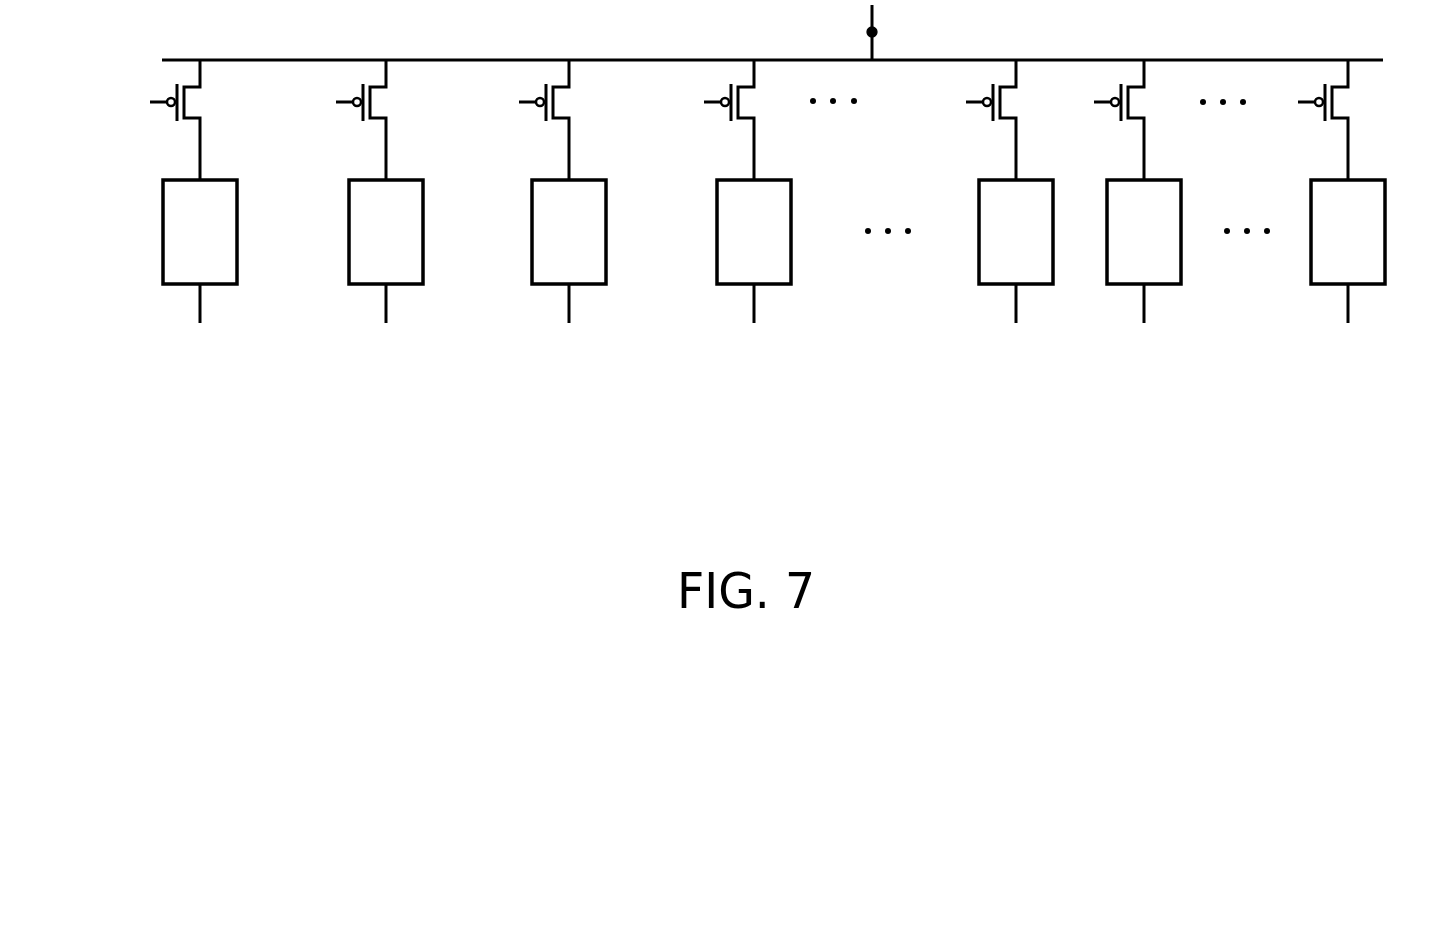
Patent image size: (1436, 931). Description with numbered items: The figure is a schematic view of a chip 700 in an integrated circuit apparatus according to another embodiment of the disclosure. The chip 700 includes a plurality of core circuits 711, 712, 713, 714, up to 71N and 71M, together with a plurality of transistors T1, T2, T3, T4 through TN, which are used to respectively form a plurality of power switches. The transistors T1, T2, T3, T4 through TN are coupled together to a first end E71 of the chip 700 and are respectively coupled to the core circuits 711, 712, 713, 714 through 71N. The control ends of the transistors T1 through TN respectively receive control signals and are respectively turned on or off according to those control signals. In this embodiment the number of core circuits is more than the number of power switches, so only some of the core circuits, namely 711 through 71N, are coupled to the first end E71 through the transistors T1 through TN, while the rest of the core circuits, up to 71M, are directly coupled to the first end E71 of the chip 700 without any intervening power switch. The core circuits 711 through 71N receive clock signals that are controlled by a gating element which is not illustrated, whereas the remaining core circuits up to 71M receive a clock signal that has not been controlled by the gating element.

The chip 700 is at (751, 233).
The first end E71 is at (878, 32).
The core circuit 711 is at (217, 178).
The core circuit 712 is at (403, 178).
The core circuit 713 is at (586, 178).
The core circuit 714 is at (771, 178).
The core circuit 71N is at (1033, 178).
The core circuit 71M is at (1365, 178).
The transistor T1 is at (188, 120).
The transistor T2 is at (377, 120).
The transistor T3 is at (561, 120).
The transistor T4 is at (746, 120).
The transistor TN is at (1008, 120).